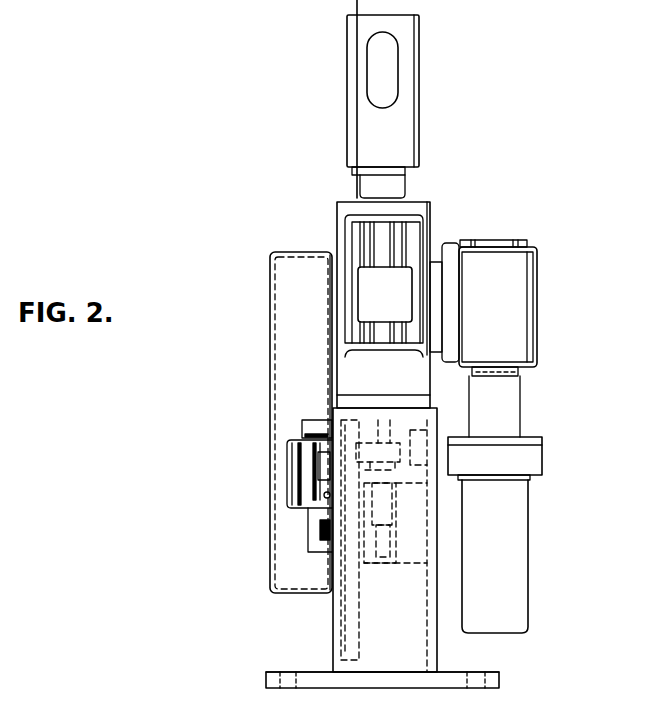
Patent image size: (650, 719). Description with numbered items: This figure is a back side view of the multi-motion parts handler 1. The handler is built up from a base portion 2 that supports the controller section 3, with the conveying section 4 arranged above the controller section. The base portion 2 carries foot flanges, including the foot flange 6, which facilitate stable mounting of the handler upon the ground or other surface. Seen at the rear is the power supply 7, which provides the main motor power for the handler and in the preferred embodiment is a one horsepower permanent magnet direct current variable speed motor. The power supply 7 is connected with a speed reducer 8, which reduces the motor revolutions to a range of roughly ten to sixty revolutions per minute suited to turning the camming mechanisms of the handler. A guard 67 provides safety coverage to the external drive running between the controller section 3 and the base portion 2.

The multi-motion parts handler 1 is at (246, 372).
The base portion 2 is at (335, 626).
The controller section 3 is at (432, 217).
The conveying section 4 is at (420, 108).
The foot flange 6 is at (266, 683).
The power supply 7 is at (540, 587).
The speed reducer 8 is at (357, 7).
The guard 67 is at (270, 330).